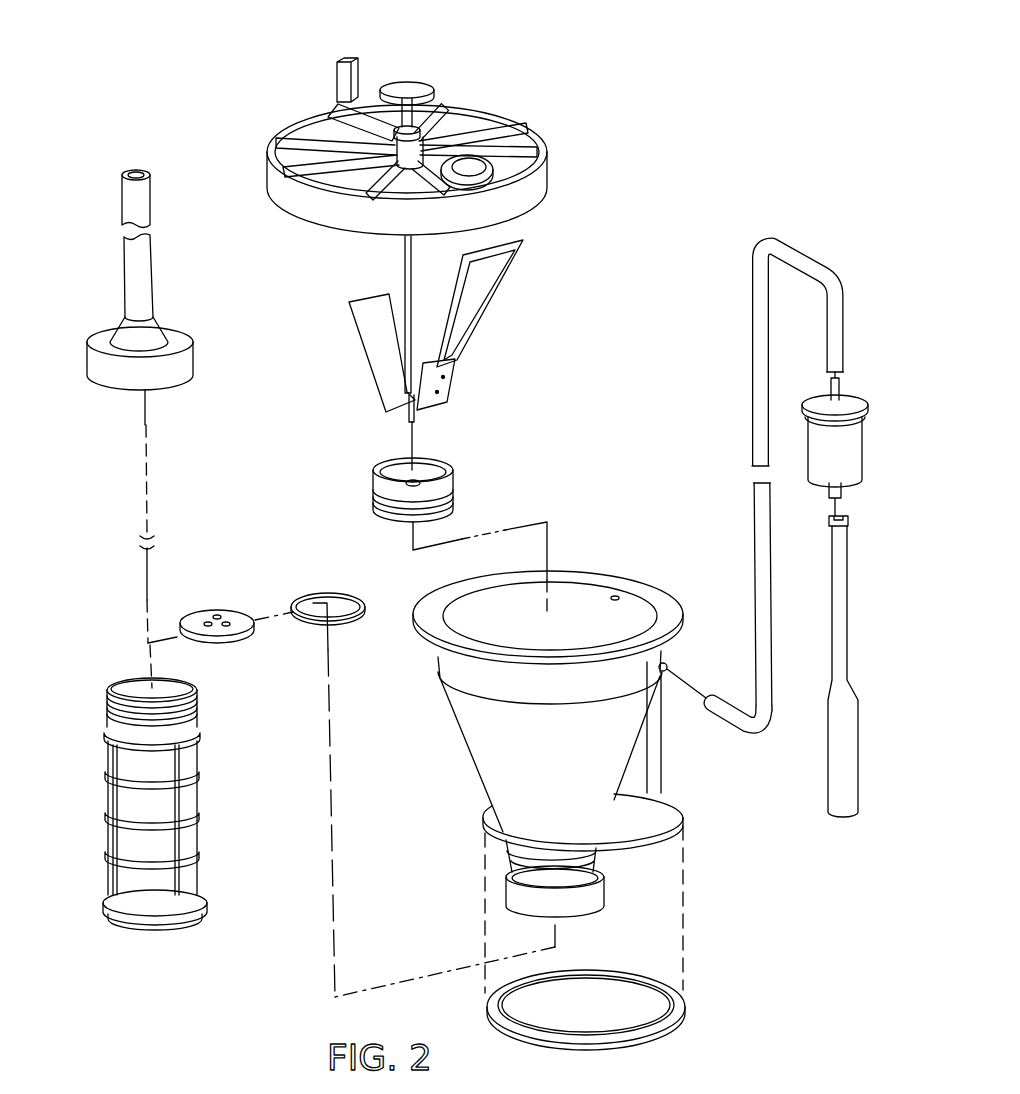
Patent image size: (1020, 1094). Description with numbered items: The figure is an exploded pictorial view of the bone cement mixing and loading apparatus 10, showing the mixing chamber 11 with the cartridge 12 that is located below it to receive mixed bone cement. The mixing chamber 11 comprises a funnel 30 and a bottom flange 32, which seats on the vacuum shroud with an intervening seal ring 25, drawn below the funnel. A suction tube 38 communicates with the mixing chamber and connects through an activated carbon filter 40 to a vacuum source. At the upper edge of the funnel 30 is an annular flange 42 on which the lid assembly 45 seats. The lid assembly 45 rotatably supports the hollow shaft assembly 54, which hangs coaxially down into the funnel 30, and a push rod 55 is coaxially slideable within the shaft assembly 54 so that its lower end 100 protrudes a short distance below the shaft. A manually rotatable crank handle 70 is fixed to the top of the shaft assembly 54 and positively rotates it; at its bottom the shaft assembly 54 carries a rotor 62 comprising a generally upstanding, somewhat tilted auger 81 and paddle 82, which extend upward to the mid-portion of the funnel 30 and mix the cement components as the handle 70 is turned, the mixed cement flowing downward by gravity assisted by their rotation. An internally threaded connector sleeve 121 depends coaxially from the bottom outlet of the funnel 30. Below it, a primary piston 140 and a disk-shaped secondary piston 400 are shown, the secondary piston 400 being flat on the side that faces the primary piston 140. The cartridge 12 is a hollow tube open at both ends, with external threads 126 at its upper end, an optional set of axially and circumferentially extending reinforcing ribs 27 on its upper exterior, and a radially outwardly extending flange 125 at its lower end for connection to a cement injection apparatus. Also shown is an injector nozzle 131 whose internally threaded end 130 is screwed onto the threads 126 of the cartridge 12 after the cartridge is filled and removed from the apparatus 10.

The bone cement mixing and loading apparatus 10 is at (652, 160).
The mixing chamber 11 is at (590, 572).
The cartridge 12 is at (138, 932).
The seal ring 25 is at (690, 1018).
The reinforcing ribs 27 is at (205, 768).
The funnel 30 is at (456, 738).
The bottom flange 32 is at (667, 800).
The suction tube 38 is at (752, 497).
The activated carbon filter 40 is at (855, 403).
The annular flange 42 is at (622, 580).
The lid assembly 45 is at (508, 108).
The hollow shaft assembly 54 is at (400, 259).
The push rod 55 is at (430, 412).
The rotor 62 is at (452, 377).
The crank handle 70 is at (357, 60).
The auger 81 is at (510, 281).
The paddle 82 is at (360, 325).
The lower end of push rod 100 is at (420, 425).
The connector sleeve 121 is at (598, 885).
The flange 125 is at (186, 920).
The external threads 126 is at (200, 716).
The internally threaded end 130 is at (86, 356).
The injector nozzle 131 is at (118, 279).
The primary piston 140 is at (368, 497).
The secondary piston 400 is at (214, 603).